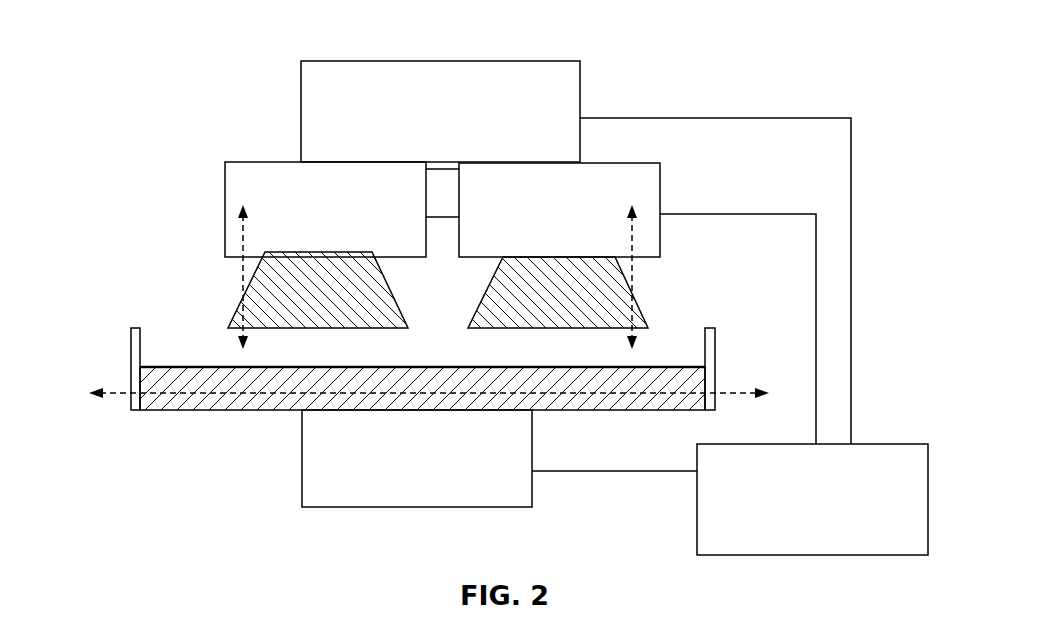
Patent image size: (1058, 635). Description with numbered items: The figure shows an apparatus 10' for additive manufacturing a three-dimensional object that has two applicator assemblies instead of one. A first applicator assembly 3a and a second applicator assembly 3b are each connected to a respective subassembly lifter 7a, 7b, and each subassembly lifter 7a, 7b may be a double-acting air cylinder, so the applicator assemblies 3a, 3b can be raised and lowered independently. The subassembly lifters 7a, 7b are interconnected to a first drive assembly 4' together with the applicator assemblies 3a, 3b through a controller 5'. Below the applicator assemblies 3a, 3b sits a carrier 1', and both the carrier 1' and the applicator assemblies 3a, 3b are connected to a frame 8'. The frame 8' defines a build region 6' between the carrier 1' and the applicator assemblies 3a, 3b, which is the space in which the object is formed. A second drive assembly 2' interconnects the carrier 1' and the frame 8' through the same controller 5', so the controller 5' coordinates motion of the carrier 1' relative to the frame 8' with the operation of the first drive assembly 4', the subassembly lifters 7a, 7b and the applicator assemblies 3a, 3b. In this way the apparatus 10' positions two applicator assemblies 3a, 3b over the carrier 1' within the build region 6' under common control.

The apparatus 10' is at (63, 33).
The carrier 1' is at (425, 418).
The second drive assembly 2' is at (499, 458).
The first applicator assembly 3a is at (331, 303).
The second applicator assembly 3b is at (571, 303).
The first drive assembly 4' is at (576, 252).
The controller 5' is at (812, 499).
The build region 6' is at (348, 344).
The first subassembly lifter 7a is at (339, 216).
The second subassembly lifter 7b is at (574, 216).
The frame 8' is at (384, 369).